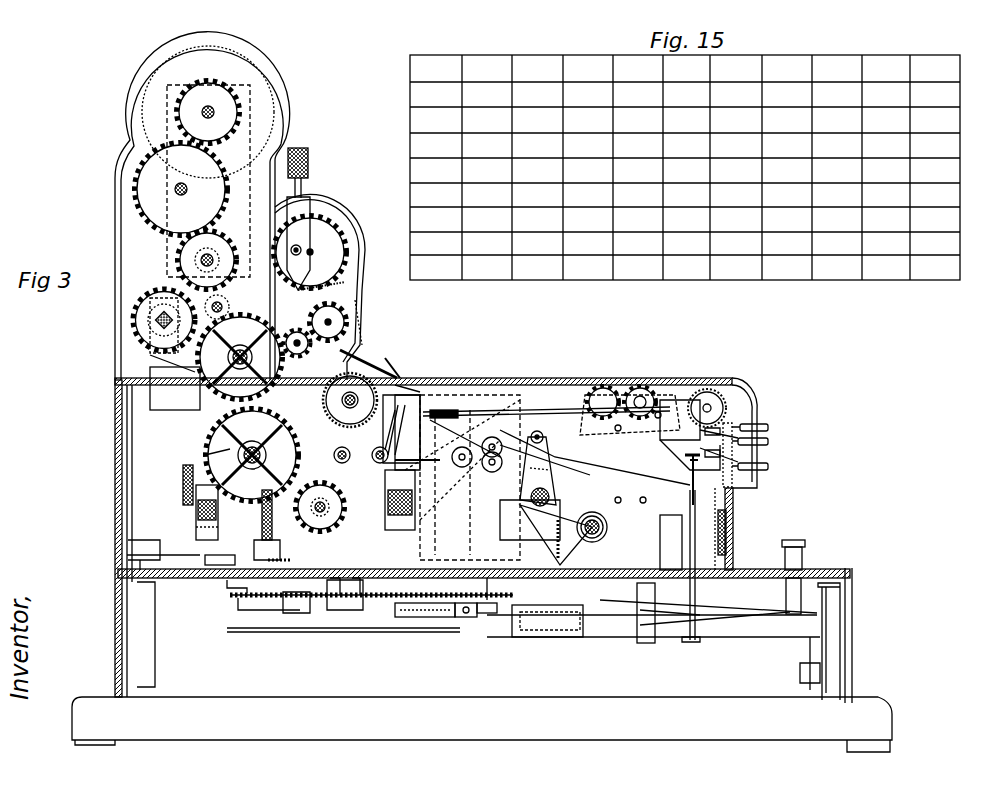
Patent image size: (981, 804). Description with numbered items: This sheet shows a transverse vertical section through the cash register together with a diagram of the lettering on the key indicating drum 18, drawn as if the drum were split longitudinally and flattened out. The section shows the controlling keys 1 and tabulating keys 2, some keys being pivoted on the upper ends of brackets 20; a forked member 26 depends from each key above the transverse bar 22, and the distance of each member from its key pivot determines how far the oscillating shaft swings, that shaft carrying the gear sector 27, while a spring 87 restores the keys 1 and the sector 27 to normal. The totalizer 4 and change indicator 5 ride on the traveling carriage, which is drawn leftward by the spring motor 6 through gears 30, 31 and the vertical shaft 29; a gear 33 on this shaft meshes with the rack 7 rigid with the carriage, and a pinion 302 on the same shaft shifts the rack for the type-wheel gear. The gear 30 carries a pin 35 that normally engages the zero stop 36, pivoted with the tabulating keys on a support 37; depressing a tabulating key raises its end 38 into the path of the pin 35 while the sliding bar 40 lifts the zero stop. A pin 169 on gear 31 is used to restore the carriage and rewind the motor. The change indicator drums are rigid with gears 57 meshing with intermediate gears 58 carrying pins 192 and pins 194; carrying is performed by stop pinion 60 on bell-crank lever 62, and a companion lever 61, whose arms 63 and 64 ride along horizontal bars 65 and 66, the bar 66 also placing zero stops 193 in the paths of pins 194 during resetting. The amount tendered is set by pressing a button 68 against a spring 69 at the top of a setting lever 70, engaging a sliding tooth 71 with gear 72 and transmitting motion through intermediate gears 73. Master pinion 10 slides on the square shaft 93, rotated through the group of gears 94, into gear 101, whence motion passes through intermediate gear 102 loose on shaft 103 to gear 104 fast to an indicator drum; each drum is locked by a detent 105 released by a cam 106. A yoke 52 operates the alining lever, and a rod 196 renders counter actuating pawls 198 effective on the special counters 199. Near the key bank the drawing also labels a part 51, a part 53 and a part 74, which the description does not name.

In FIG. 3, the controlling keys 1 is at (768, 425).
In FIG. 3, the tabulating keys 2 is at (800, 542).
In FIG. 3, the totalizer 4 is at (215, 438).
In FIG. 3, the change indicator 5 is at (400, 358).
In FIG. 3, the spring motor 6 is at (440, 617).
In FIG. 3, the rack 7 is at (181, 555).
In FIG. 3, the master pinion 10 is at (160, 285).
In FIG. 15, the key indicating drum 18 is at (838, 282).
In FIG. 3, the key indicating drum 18 is at (718, 400).
In FIG. 3, the brackets 20 is at (457, 477).
In FIG. 3, the bar 22 is at (530, 520).
In FIG. 3, the forked member 26 is at (540, 432).
In FIG. 3, the gear sector 27 is at (560, 497).
In FIG. 3, the vertical shaft 29 is at (290, 615).
In FIG. 3, the gear 30 is at (400, 617).
In FIG. 3, the gear 31 is at (228, 596).
In FIG. 3, the gear 33 is at (259, 525).
In FIG. 3, the pin 35 is at (480, 620).
In FIG. 3, the zero stop 36 is at (500, 640).
In FIG. 3, the support 37 is at (625, 618).
In FIG. 3, the end of tabulating key 38 is at (540, 640).
In FIG. 3, the sliding bar 40 is at (808, 656).
In FIG. 3, the pin 51 is at (693, 472).
In FIG. 3, the yoke 52 is at (215, 398).
In FIG. 3, the rod 53 is at (690, 556).
In FIG. 3, the gears 57 is at (395, 385).
In FIG. 3, the intermediate gears 58 is at (401, 429).
In FIG. 3, the stop pinion 60 is at (425, 396).
In FIG. 3, the bell-crank lever 61 is at (205, 455).
In FIG. 3, the bell-crank lever 62 is at (400, 430).
In FIG. 3, the arm 63 is at (196, 497).
In FIG. 3, the arm 64 is at (416, 470).
In FIG. 3, the horizontal bar 65 is at (185, 476).
In FIG. 3, the horizontal bar 66 is at (493, 440).
In FIG. 3, the button 68 is at (308, 152).
In FIG. 3, the spring 69 is at (308, 167).
In FIG. 3, the setting lever 70 is at (330, 190).
In FIG. 3, the sliding tooth 71 is at (310, 205).
In FIG. 3, the gear 72 is at (345, 240).
In FIG. 3, the intermediate gears 73 is at (362, 345).
In FIG. 3, the spring 74 is at (742, 520).
In FIG. 3, the spring 87 is at (590, 512).
In FIG. 3, the square shaft 93 is at (145, 322).
In FIG. 3, the group of gears 94 is at (150, 332).
In FIG. 3, the gear 101 is at (178, 255).
In FIG. 3, the intermediate gear 102 is at (157, 192).
In FIG. 3, the shaft 103 is at (185, 193).
In FIG. 3, the gear 104 is at (215, 95).
In FIG. 3, the detent 105 is at (214, 300).
In FIG. 3, the cam 106 is at (240, 357).
In FIG. 3, the pin 169 is at (420, 605).
In FIG. 3, the pins 192 is at (375, 405).
In FIG. 3, the zero stops 193 is at (430, 488).
In FIG. 3, the pins 194 is at (346, 480).
In FIG. 3, the rod 196 is at (495, 404).
In FIG. 3, the counter actuating pawls 198 is at (630, 449).
In FIG. 3, the special counters 199 is at (630, 388).
In FIG. 3, the pinion 302 is at (268, 559).